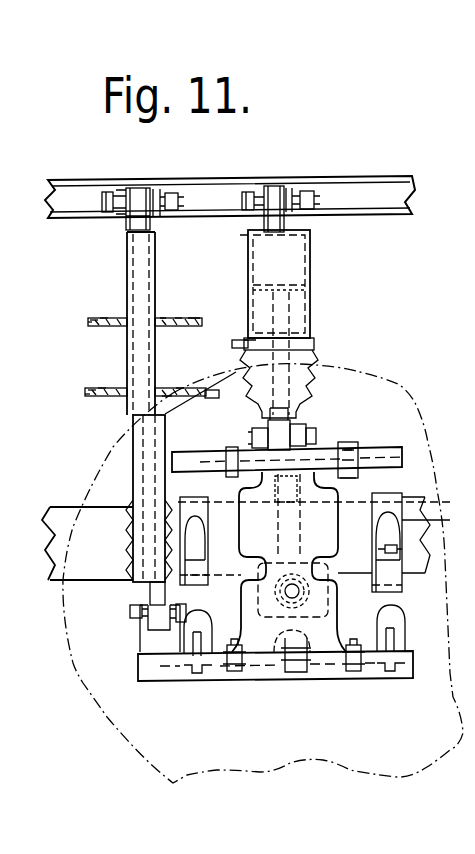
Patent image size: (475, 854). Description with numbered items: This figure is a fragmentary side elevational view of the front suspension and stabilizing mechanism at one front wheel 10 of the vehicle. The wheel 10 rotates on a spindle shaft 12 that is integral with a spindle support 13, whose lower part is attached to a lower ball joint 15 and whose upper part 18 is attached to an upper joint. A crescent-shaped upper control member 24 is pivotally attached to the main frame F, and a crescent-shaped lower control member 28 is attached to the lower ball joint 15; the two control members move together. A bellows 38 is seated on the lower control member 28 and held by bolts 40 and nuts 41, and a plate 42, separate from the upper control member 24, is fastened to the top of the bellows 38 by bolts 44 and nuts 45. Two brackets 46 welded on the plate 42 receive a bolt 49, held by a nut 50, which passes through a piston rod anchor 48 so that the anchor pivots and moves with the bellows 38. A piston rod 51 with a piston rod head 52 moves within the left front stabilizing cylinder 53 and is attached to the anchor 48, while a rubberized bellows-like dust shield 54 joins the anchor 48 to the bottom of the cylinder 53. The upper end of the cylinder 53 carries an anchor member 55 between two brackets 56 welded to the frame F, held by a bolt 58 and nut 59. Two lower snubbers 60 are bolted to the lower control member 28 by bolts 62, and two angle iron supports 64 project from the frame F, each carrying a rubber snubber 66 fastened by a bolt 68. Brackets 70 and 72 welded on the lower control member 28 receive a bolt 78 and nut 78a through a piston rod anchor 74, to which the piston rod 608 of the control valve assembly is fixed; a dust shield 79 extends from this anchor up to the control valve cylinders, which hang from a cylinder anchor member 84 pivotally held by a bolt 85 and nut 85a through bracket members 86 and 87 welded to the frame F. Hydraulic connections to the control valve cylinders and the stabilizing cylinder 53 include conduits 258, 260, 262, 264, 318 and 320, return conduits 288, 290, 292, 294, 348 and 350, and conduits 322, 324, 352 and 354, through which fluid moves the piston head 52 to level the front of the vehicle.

The main frame F is at (393, 178).
The bolt 85 is at (102, 202).
The cylinder anchor member 84 is at (139, 188).
The bracket member 86 is at (123, 190).
The bracket member 87 is at (158, 191).
The nut 85a is at (180, 207).
The anchor member 55 is at (286, 228).
The brackets 56 is at (272, 192).
The nut 59 is at (305, 195).
The bolt 58 is at (240, 192).
The left front stabilizing cylinder 53 is at (310, 257).
The piston rod head 52 is at (306, 280).
The piston rod 51 is at (288, 321).
The dust shield 54 is at (313, 363).
The front wheel 10 is at (400, 410).
The brackets 46 is at (266, 433).
The piston rod anchor 48 is at (296, 421).
The nut 50 is at (316, 435).
The bolt 49 is at (250, 439).
The upper control member 24 is at (205, 456).
The plate 42 is at (355, 451).
The nuts 45 is at (348, 450).
The bolts 44 is at (350, 479).
The bellows 38 is at (336, 505).
The upper part of spindle support 18 is at (302, 526).
The spindle support 13 is at (330, 592).
The spindle shaft 12 is at (300, 597).
The lower ball joint 15 is at (306, 631).
The angle iron support 64 is at (206, 510).
The rubber snubber 66 is at (204, 532).
The bolt 68 is at (402, 550).
The piston rod 608 is at (142, 454).
The dust shield 79 is at (128, 515).
The conduit 318 is at (116, 318).
The conduit 258 is at (110, 318).
The return conduit 288 is at (98, 318).
The return conduit 348 is at (88, 325).
The conduit 264 is at (167, 318).
The conduit 324 is at (160, 318).
The return conduit 294 is at (178, 318).
The return conduit 354 is at (200, 309).
The return conduit 352 is at (238, 333).
The conduit 320 is at (119, 388).
The conduit 260 is at (106, 388).
The return conduit 290 is at (92, 389).
The return conduit 350 is at (88, 397).
The conduit 322 is at (165, 388).
The conduit 262 is at (180, 388).
The return chamber 292 is at (172, 398).
The piston rod anchor 74 is at (150, 598).
The bracket 72 is at (160, 628).
The bracket 70 is at (140, 610).
The bolt 78 is at (130, 613).
The nut 78a is at (186, 614).
The lower control member 28 is at (152, 682).
The lower snubber 60 is at (204, 614).
The bolts 62 is at (190, 644).
The nuts 41 is at (238, 648).
The bolts 40 is at (305, 682).